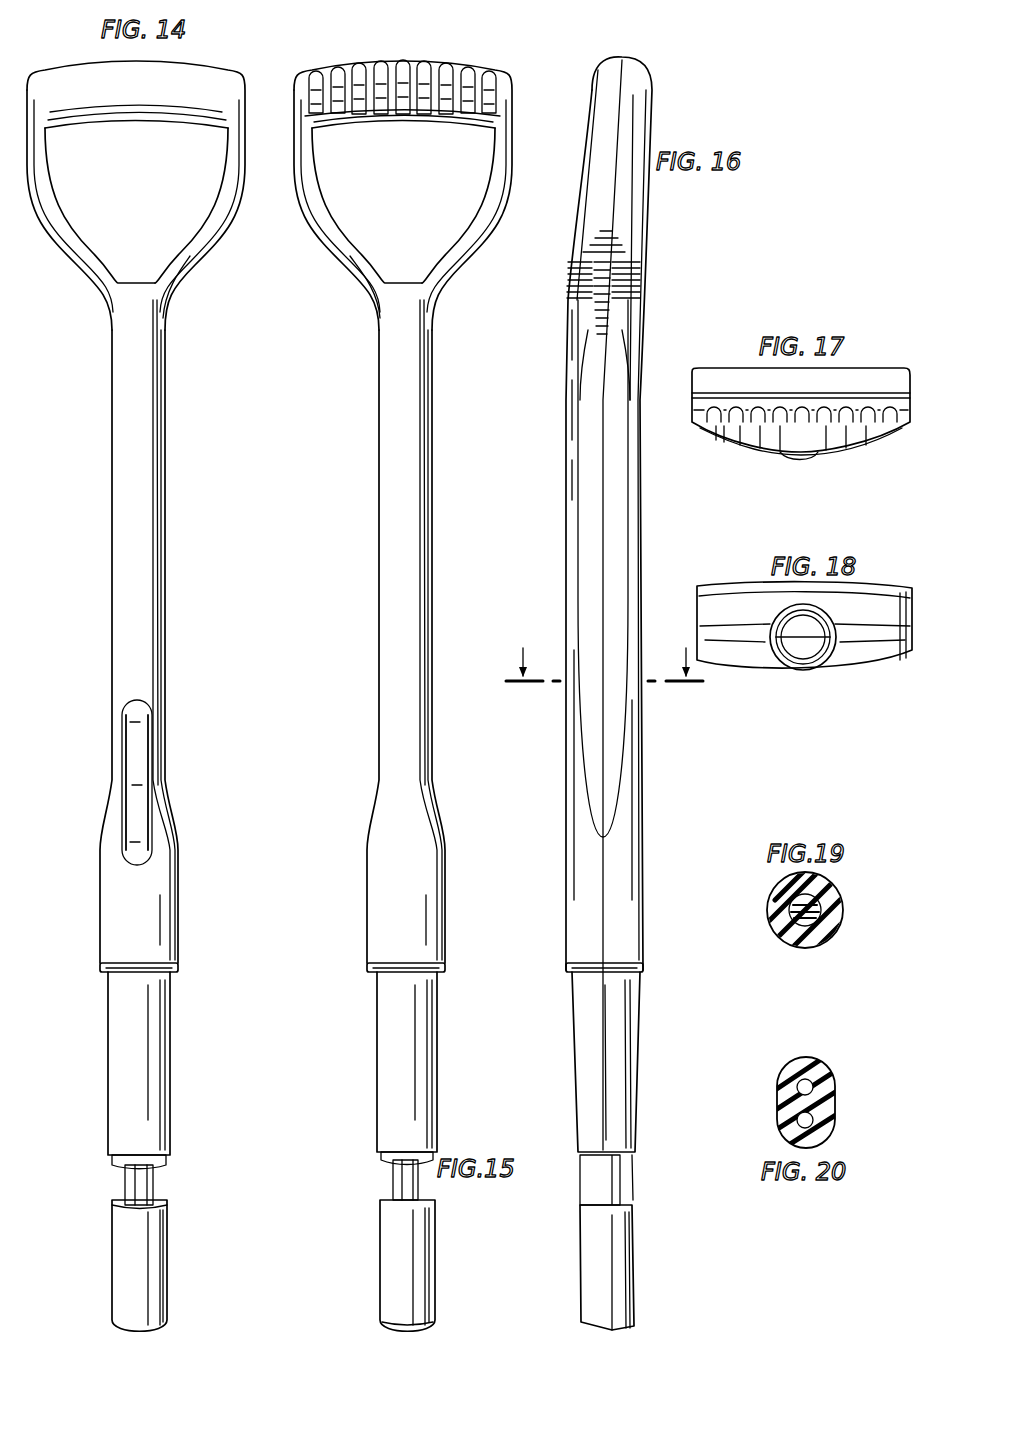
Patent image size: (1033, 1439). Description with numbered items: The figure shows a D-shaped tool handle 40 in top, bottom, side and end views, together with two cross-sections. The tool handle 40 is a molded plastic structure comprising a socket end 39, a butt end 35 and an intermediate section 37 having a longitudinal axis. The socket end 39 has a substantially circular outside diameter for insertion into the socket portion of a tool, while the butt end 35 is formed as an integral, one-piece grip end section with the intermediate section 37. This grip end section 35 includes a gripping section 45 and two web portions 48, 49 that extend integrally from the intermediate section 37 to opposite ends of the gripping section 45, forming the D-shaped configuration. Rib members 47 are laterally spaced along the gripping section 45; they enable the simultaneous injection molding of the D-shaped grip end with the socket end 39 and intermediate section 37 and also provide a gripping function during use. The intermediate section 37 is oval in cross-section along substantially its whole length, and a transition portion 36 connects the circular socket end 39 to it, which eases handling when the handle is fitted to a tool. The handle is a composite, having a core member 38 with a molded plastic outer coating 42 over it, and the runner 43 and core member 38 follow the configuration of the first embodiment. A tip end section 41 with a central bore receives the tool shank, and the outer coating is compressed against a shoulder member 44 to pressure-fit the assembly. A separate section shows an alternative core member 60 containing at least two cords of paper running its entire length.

In FIG. 14, the butt end 35 is at (203, 268).
In FIG. 15, the butt end 35 is at (514, 86).
In FIG. 14, the transition portion 36 is at (176, 826).
In FIG. 14, the intermediate section 37 is at (165, 649).
In FIG. 15, the intermediate section 37 is at (378, 509).
In FIG. 16, the intermediate section 37 is at (602, 600).
In FIG. 14, the core member 38 is at (126, 1185).
In FIG. 15, the core member 38 is at (420, 1190).
In FIG. 19, the core member 38 is at (840, 905).
In FIG. 14, the socket end 39 is at (173, 1120).
In FIG. 15, the socket end 39 is at (407, 1068).
In FIG. 16, the socket end 39 is at (606, 1062).
In FIG. 14, the tool handle 40 is at (90, 652).
In FIG. 15, the tool handle 40 is at (368, 596).
In FIG. 16, the tool handle 40 is at (553, 523).
In FIG. 14, the tip end section 41 is at (160, 1287).
In FIG. 15, the tip end section 41 is at (395, 1295).
In FIG. 16, the tip end section 41 is at (595, 1289).
In FIG. 19, the outer coating 42 is at (838, 928).
In FIG. 14, the runner 43 is at (142, 1186).
In FIG. 15, the runner 43 is at (405, 1183).
In FIG. 16, the runner 43 is at (579, 1178).
In FIG. 14, the shoulder member 44 is at (180, 975).
In FIG. 15, the shoulder member 44 is at (406, 967).
In FIG. 16, the shoulder member 44 is at (570, 970).
In FIG. 18, the shoulder member 44 is at (804, 626).
In FIG. 14, the gripping section 45 is at (211, 63).
In FIG. 17, the gripping section 45 is at (850, 383).
In FIG. 15, the rib members 47 is at (436, 76).
In FIG. 17, the rib members 47 is at (833, 425).
In FIG. 14, the web portion 48 is at (226, 192).
In FIG. 15, the web portion 48 is at (318, 206).
In FIG. 14, the web portion 49 is at (55, 218).
In FIG. 15, the web portion 49 is at (490, 206).
In FIG. 16, the web portion 49 is at (628, 215).
In FIG. 20, the core member 60 is at (838, 1098).